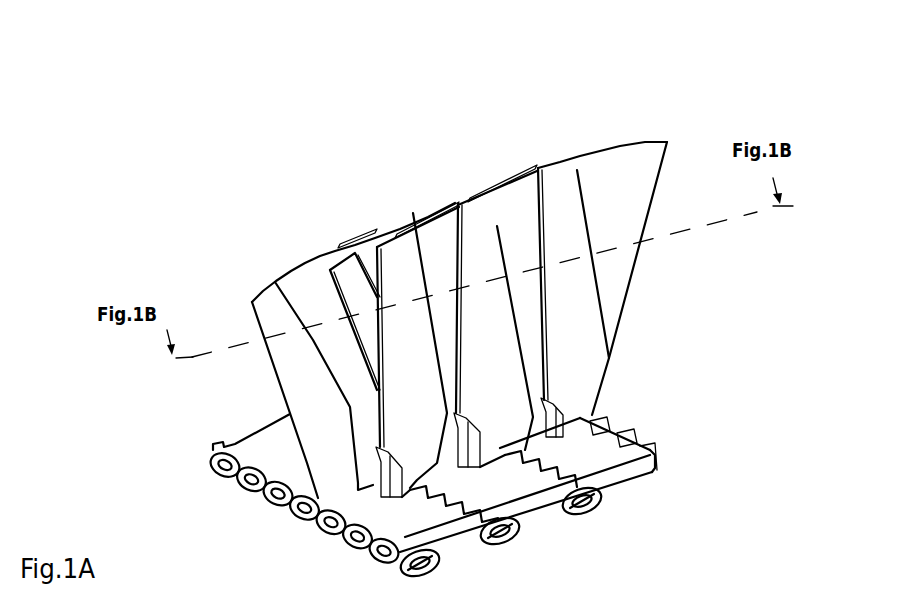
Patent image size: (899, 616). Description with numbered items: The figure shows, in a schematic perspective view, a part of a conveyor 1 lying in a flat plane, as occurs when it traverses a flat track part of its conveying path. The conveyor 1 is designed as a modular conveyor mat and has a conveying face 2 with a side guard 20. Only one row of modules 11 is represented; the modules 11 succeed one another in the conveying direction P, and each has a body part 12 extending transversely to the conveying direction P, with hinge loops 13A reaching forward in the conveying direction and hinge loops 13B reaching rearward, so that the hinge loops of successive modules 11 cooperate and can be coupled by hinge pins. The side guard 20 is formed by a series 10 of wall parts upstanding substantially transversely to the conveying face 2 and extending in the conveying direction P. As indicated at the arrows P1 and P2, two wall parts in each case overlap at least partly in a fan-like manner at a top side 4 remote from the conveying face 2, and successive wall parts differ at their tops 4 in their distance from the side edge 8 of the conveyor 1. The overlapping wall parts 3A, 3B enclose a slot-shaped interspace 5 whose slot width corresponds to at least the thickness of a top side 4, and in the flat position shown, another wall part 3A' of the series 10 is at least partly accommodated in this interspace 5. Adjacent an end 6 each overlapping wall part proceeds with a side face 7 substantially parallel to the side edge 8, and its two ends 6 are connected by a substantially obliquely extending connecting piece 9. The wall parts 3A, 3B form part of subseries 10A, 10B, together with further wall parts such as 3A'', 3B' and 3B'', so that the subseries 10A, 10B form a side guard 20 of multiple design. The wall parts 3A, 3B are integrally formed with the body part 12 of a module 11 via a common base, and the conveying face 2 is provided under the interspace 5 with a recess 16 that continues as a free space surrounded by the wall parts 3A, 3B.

The conveyor 1 is at (370, 289).
The conveying face 2 is at (242, 440).
The wall part 3A is at (280, 330).
The other wall part 3A' is at (603, 314).
The wall part 3A'' is at (652, 283).
The wall part 3B is at (281, 350).
The wall part 3B' is at (413, 155).
The wall part 3B'' is at (514, 236).
The top side 4 is at (340, 250).
The slot-shaped interspace 5 is at (413, 213).
The end 6 is at (667, 145).
The side face 7 is at (568, 215).
The side edge 8 is at (613, 483).
The connecting piece 9 is at (608, 167).
The series of wall parts 10 is at (466, 186).
The subseries of wall parts 10A is at (552, 173).
The subseries of wall parts 10B is at (459, 203).
The module 11 is at (501, 521).
The body part 12 is at (653, 450).
The hinge loops 13A is at (212, 453).
The hinge loops 13B is at (623, 437).
The recess 16 is at (328, 535).
The side guard 20 is at (693, 253).
The conveying direction P is at (510, 590).
The arrow P1 is at (364, 221).
The arrow P2 is at (560, 158).